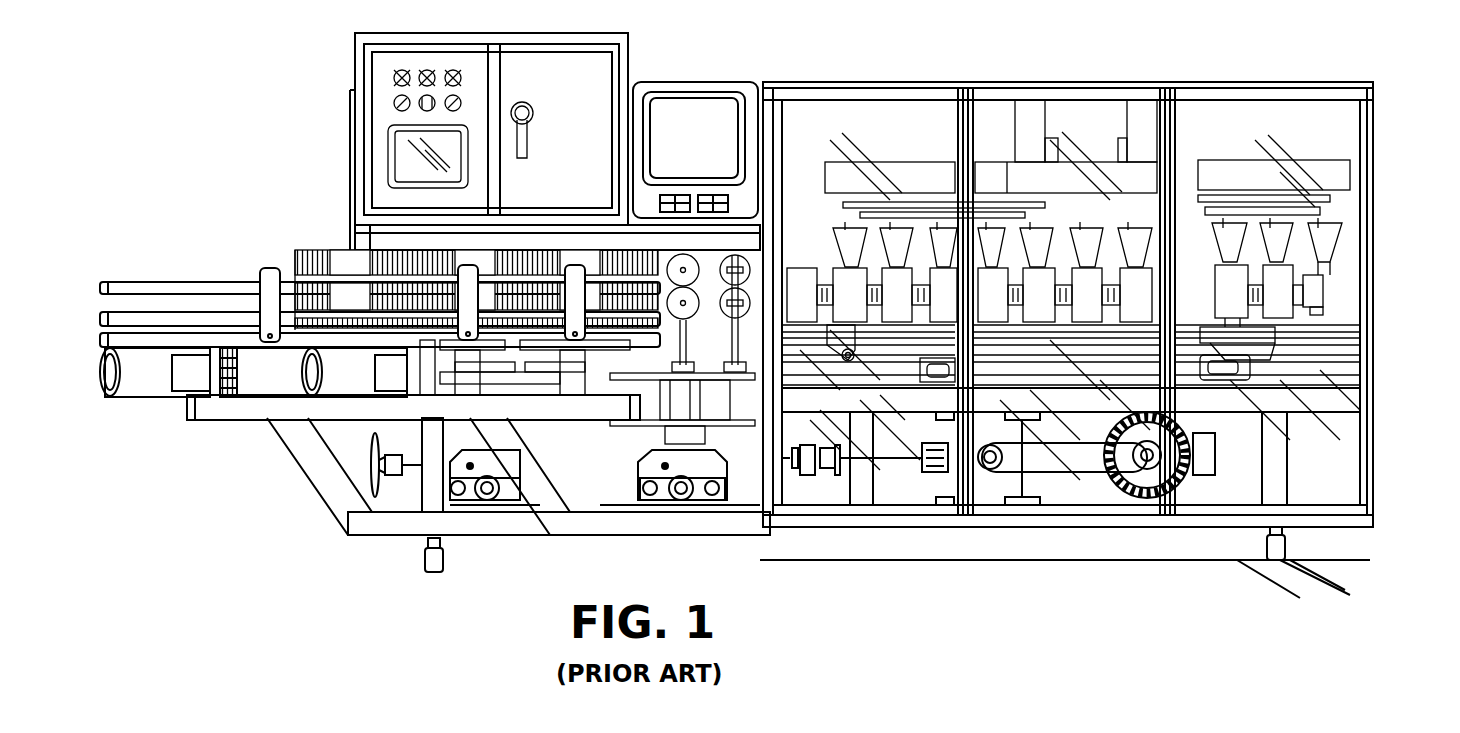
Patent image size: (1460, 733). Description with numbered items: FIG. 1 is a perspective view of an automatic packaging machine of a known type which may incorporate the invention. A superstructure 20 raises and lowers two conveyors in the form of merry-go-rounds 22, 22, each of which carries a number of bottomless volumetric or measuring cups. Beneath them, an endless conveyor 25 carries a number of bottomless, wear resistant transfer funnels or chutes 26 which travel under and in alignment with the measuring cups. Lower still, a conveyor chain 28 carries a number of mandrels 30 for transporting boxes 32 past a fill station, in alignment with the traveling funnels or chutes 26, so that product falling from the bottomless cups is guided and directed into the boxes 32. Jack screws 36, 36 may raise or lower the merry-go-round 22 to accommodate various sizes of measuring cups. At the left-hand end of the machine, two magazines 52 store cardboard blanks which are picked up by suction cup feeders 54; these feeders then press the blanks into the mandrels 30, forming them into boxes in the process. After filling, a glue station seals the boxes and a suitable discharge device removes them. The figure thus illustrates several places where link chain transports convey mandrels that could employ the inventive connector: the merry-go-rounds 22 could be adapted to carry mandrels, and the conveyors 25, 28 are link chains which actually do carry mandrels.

The superstructure 20 is at (958, 78).
The merry-go-round 22 is at (917, 165).
The endless conveyor 25 is at (1305, 245).
The transfer funnel 26 is at (1322, 249).
The conveyor chain 28 is at (1265, 287).
The mandrel 30 is at (833, 277).
The box 32 is at (847, 265).
The jack screw 36 is at (1033, 108).
The magazine 52 is at (350, 248).
The suction cup feeder 54 is at (715, 310).